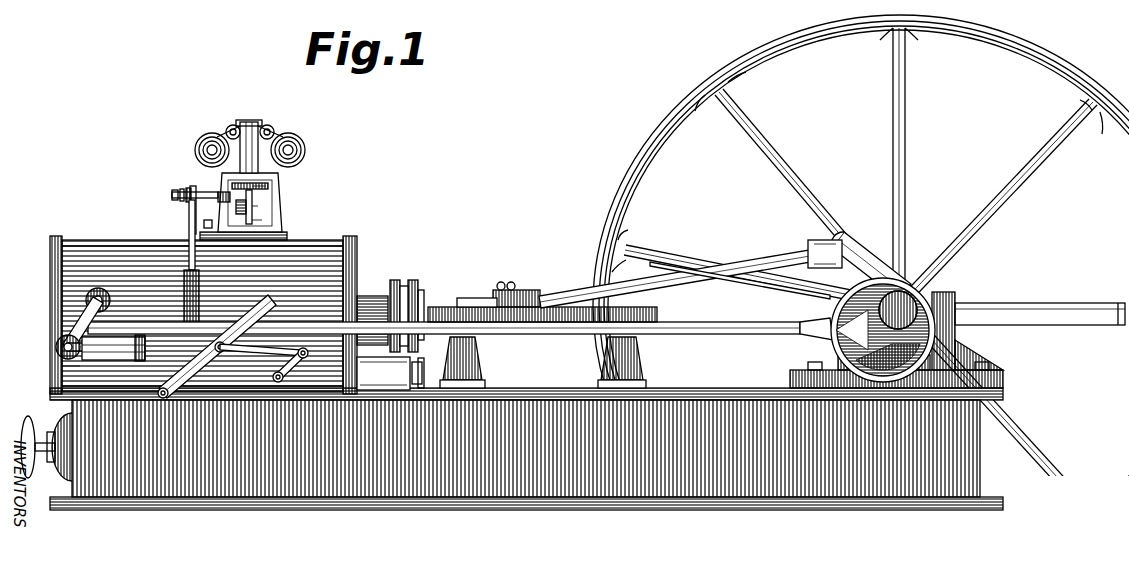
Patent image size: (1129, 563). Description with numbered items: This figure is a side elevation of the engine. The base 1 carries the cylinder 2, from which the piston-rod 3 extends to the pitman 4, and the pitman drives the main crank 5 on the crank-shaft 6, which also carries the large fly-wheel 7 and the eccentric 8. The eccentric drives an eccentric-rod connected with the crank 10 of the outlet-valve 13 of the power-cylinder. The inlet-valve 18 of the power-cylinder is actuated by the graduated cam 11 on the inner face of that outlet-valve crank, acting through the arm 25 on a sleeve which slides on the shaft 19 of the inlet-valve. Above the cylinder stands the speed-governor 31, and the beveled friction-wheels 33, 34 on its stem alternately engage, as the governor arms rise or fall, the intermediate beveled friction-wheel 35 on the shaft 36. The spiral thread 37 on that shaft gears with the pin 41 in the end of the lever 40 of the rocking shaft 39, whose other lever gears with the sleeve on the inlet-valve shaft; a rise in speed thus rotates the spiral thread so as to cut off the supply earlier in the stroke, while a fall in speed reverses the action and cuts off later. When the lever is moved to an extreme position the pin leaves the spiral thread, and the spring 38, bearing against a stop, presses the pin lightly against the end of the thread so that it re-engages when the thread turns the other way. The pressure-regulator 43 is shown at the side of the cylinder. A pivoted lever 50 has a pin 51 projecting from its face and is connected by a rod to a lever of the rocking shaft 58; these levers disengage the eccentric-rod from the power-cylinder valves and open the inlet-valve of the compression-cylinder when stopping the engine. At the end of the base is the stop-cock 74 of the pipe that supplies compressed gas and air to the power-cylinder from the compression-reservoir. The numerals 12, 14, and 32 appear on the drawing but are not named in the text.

The base 1 is at (526, 449).
The cylinder 2 is at (203, 315).
The piston-rod 3 is at (428, 305).
The pitman 4 is at (690, 272).
The main crank 5 is at (860, 250).
The crank-shaft 6 is at (950, 296).
The fly-wheel 7 is at (861, 289).
The eccentric 8 is at (955, 335).
The crank of the outlet-valve 10 is at (62, 350).
The graduated cam 11 is at (62, 372).
The valve stem 12 is at (62, 326).
The outlet-valve 13 is at (90, 290).
The rocker 14 is at (70, 298).
The inlet-valve 18 is at (54, 392).
The shaft of the inlet-valve 19 is at (60, 401).
The arm 25 is at (62, 360).
The speed-governor 31 is at (250, 135).
The governor housing 32 is at (283, 206).
The beveled friction-wheel 33 is at (262, 194).
The beveled friction-wheel 34 is at (261, 221).
The intermediate beveled friction-wheel 35 is at (260, 209).
The shaft 36 is at (217, 195).
The spiral thread 37 is at (220, 222).
The spring 38 is at (188, 218).
The rocking shaft 39 is at (170, 252).
The lever 40 is at (189, 190).
The pin 41 is at (172, 189).
The pressure-regulator 43 is at (507, 348).
The pivoted lever 50 is at (217, 346).
The pin 51 is at (240, 340).
The rocking shaft 58 is at (278, 382).
The stop-cock 74 is at (35, 447).